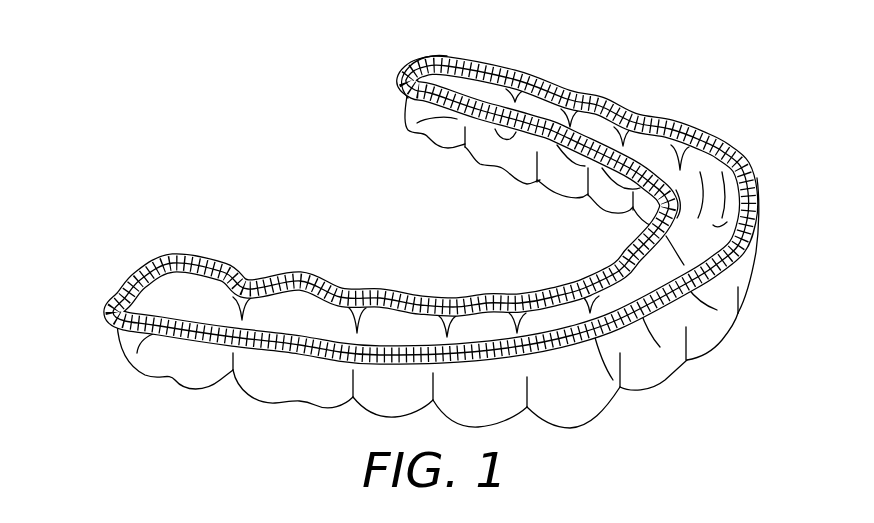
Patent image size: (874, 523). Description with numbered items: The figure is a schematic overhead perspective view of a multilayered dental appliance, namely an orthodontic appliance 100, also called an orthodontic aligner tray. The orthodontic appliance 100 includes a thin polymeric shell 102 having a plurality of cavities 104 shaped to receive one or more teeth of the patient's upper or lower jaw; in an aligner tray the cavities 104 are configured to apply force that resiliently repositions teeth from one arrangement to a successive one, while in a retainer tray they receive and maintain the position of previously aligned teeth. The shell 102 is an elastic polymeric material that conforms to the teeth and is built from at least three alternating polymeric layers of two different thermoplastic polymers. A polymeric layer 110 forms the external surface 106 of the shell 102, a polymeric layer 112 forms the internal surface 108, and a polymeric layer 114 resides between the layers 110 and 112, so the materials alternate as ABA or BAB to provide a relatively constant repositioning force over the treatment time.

The orthodontic appliance 100 is at (209, 97).
The polymeric shell 102 is at (420, 57).
The cavities 104 is at (176, 291).
The external surface 106 is at (187, 358).
The internal surface 108 is at (327, 320).
The polymeric layer 110 is at (253, 283).
The polymeric layer 112 is at (135, 274).
The polymeric layer 114 is at (115, 310).